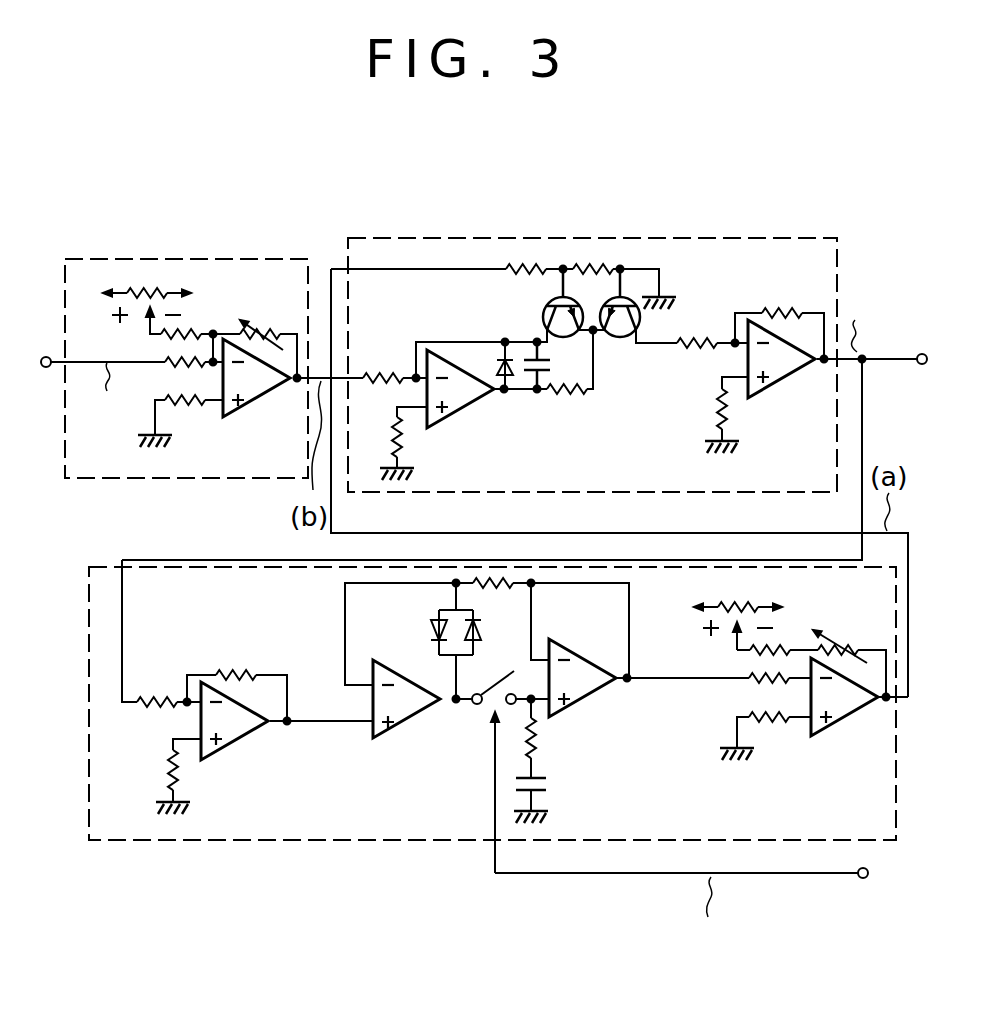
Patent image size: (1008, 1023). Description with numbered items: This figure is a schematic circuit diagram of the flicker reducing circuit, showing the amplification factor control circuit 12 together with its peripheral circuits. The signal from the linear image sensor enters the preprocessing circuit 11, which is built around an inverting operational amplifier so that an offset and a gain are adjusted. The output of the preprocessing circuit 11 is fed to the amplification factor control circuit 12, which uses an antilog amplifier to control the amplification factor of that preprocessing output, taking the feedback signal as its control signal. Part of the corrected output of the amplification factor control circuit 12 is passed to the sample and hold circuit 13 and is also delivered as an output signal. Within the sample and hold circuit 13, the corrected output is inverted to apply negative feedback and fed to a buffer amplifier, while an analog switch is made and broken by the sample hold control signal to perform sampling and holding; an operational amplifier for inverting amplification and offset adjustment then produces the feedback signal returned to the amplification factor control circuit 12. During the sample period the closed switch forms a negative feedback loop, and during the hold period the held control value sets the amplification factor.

The preprocessing circuit 11 is at (192, 258).
The amplification factor control circuit 12 is at (606, 237).
The sample and hold circuit 13 is at (280, 842).